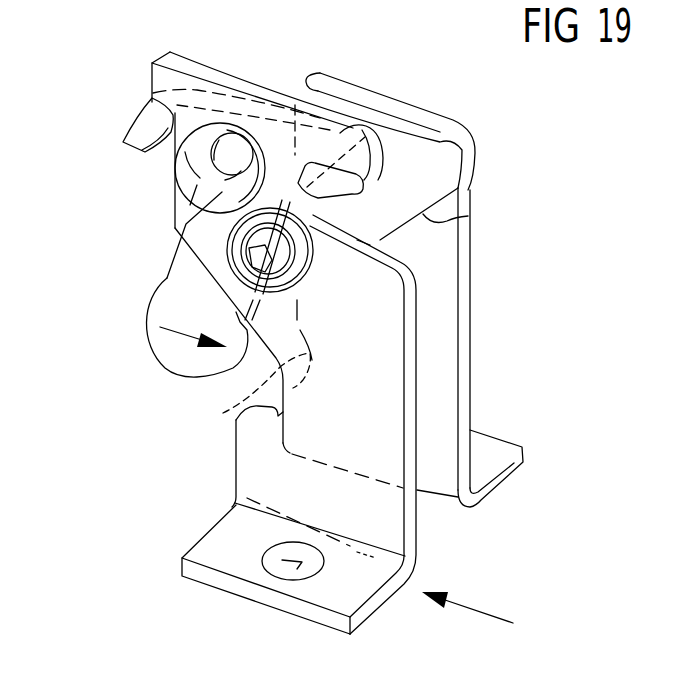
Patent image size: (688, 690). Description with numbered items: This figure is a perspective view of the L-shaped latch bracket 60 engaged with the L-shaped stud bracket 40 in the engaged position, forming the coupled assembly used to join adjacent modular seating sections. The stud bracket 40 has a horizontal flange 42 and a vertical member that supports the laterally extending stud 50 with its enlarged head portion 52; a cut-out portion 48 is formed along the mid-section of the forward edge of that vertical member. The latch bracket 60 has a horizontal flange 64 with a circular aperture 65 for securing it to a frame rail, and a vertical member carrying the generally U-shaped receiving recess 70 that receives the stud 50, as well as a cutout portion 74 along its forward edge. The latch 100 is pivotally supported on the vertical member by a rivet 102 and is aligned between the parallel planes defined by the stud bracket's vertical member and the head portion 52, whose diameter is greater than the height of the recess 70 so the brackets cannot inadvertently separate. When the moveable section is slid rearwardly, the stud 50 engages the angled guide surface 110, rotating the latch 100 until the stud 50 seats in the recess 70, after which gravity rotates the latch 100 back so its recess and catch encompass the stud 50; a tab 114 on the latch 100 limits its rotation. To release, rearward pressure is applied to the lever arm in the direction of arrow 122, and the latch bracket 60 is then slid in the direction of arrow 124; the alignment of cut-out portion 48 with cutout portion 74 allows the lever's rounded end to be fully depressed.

The L-shaped stud bracket 40 is at (443, 323).
The horizontal flange 42 is at (495, 457).
The cut-out portion 48 is at (250, 412).
The stud 50 is at (320, 213).
The head portion 52 is at (325, 284).
The L-shaped latch bracket 60 is at (150, 208).
The horizontal flange 64 is at (220, 580).
The circular aperture 65 is at (288, 565).
The U-shaped recess 70 is at (300, 187).
The cutout portion 74 is at (280, 357).
The latch 100 is at (163, 293).
The rivet 102 is at (182, 238).
The angled guide surface 110 is at (468, 216).
The tab 114 is at (126, 142).
The arrow 122 is at (185, 334).
The arrow 124 is at (505, 620).